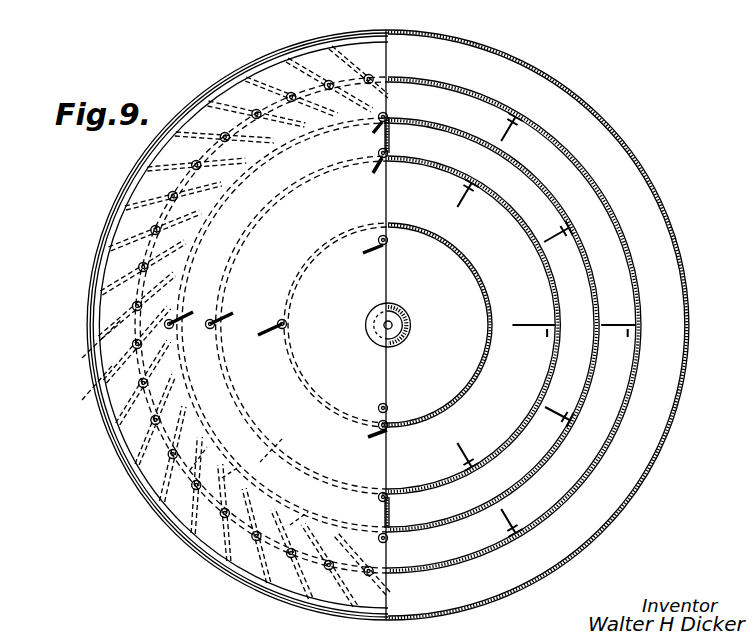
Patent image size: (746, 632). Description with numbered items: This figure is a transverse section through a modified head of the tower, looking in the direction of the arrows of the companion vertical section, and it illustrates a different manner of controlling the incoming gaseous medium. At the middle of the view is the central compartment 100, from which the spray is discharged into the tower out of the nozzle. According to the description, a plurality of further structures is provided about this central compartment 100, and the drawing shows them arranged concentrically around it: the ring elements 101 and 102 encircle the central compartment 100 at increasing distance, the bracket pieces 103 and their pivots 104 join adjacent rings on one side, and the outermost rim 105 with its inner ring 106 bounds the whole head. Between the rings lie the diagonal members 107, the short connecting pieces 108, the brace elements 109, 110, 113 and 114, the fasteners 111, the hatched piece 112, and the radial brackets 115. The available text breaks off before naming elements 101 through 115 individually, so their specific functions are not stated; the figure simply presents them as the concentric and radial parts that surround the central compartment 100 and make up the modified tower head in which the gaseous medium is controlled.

The central compartment 100 is at (388, 325).
The intermediate tubular rings 101 is at (510, 212).
The outer tubular ring 102 is at (137, 290).
The bracket tubes 103 is at (260, 333).
The bracket pivots 104 is at (280, 328).
The outer rim 105 is at (224, 562).
The inner rim ring 106 is at (145, 477).
The diagonal struts 107 is at (100, 368).
The divider tube brackets 108 is at (358, 400).
The brace 109 is at (314, 511).
The brace 110 is at (191, 451).
The rivets 111 is at (172, 518).
The hatched bracket 112 is at (383, 500).
The brace 113 is at (282, 444).
The brace 114 is at (241, 463).
The T-brackets 115 is at (613, 318).